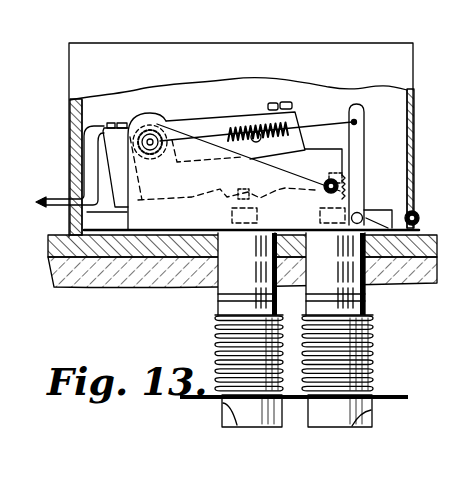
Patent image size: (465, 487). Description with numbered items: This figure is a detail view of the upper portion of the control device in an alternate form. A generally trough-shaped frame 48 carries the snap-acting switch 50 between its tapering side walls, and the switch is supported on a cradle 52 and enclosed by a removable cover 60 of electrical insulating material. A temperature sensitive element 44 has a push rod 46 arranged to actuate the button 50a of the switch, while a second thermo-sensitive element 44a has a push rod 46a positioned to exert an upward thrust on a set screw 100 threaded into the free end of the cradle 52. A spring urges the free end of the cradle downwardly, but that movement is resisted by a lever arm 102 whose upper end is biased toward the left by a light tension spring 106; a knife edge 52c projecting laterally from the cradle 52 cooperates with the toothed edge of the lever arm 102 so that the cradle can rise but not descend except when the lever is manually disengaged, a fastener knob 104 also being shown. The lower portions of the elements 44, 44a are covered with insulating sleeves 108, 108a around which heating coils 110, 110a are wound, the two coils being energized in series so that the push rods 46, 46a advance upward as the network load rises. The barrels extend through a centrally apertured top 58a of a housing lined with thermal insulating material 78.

The cover 60 is at (352, 53).
The snap-acting switch 50 is at (206, 118).
The button 50a is at (222, 168).
The light tension spring 106 is at (258, 125).
The lever arm 102 is at (360, 117).
The cradle 52 is at (332, 157).
The knife edge 52c is at (351, 180).
The set screw 100 is at (343, 187).
The fastener knob 104 is at (375, 212).
The trough-shaped frame 48 is at (176, 217).
The push rod 46 is at (230, 218).
The push rod 46a is at (318, 215).
The centrally apertured top 58a is at (48, 248).
The thermal insulating material 78 is at (98, 287).
The temperature sensitive element 44 is at (258, 265).
The second thermo-sensitive element 44a is at (362, 263).
The heating coil 110 is at (215, 333).
The heating coil 110a is at (373, 370).
The sleeve 108 is at (222, 415).
The sleeve 108a is at (370, 415).